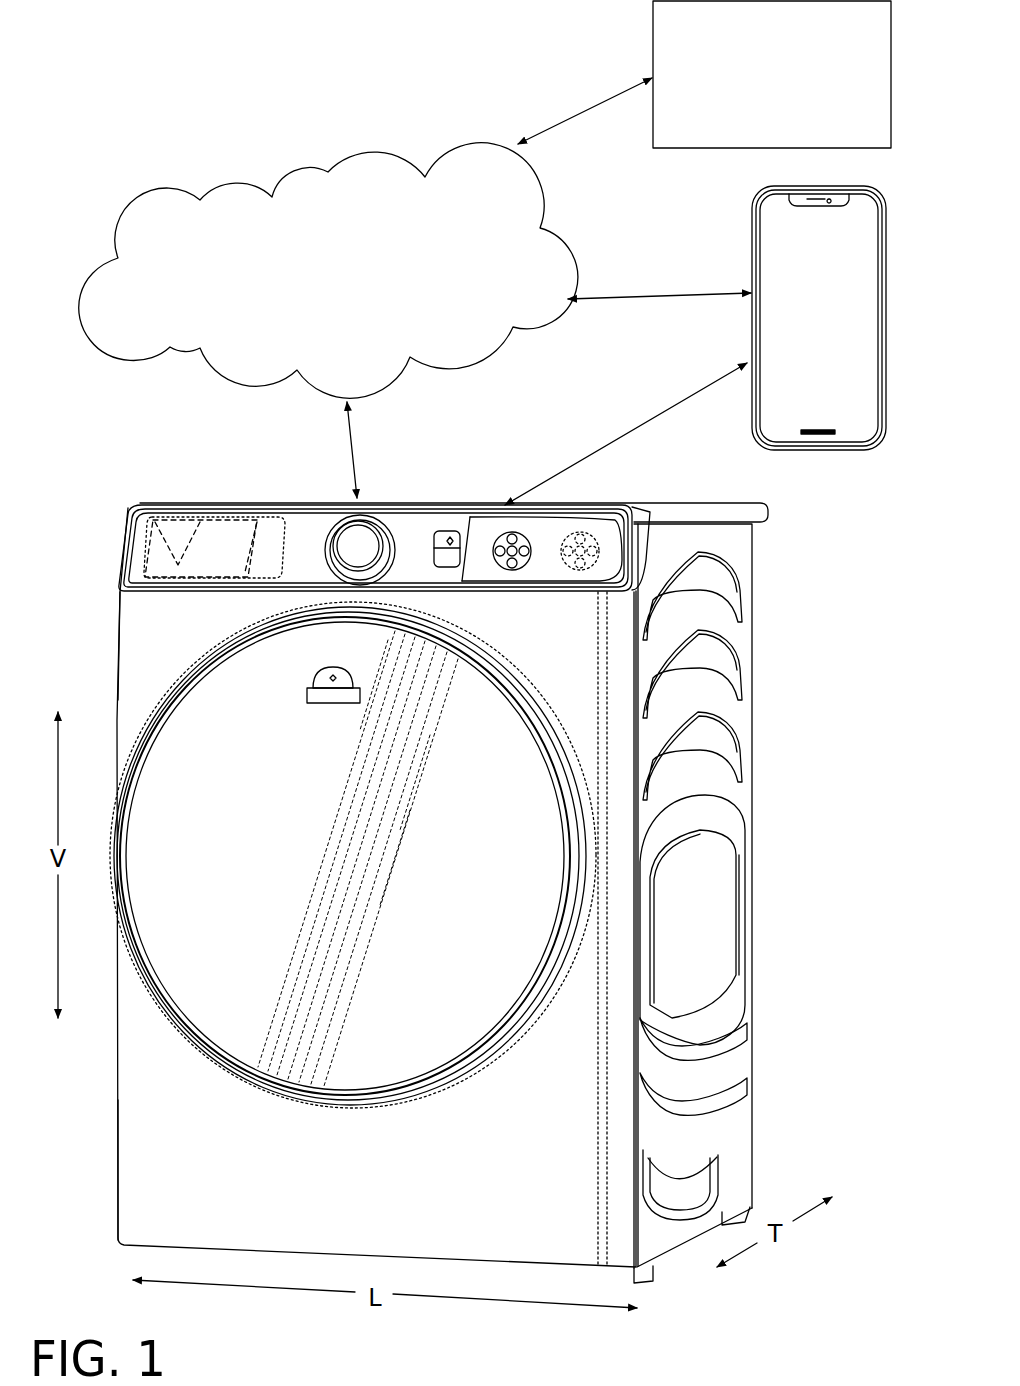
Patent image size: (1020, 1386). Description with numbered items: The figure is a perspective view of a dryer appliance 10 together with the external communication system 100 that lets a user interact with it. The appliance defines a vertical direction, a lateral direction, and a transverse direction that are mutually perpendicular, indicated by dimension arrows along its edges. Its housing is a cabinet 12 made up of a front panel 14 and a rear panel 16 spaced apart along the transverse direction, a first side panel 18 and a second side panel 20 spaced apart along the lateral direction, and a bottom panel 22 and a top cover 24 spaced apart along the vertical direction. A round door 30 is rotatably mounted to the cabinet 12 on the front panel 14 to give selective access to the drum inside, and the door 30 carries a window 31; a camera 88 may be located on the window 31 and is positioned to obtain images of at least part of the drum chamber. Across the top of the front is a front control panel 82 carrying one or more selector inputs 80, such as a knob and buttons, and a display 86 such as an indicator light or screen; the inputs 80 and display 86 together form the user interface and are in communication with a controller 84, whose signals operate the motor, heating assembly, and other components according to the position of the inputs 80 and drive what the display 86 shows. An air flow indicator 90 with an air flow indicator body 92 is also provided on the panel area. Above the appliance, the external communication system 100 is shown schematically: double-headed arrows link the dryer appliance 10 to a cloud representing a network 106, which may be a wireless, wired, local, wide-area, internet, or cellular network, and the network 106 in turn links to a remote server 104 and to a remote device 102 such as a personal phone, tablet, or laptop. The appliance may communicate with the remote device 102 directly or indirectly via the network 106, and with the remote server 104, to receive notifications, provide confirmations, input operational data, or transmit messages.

The external communication system 100 is at (282, 108).
The remote server 104 is at (772, 74).
The network 106 is at (328, 271).
The remote device 102 is at (819, 318).
The dryer appliance 10 is at (68, 515).
The cabinet 12 is at (752, 795).
The front panel 14 is at (178, 1160).
The rear panel 16 is at (752, 1012).
The first side panel 18 is at (117, 640).
The second side panel 20 is at (702, 928).
The bottom panel 22 is at (660, 1262).
The top cover 24 is at (715, 503).
The door 30 is at (353, 855).
The window 31 is at (492, 796).
The selector inputs 80 is at (375, 540).
The front control panel 82 is at (310, 535).
The controller 84 is at (160, 520).
The display 86 is at (263, 532).
The camera 88 is at (305, 695).
The air flow indicator 90 is at (598, 552).
The air flow indicator body 92 is at (525, 545).